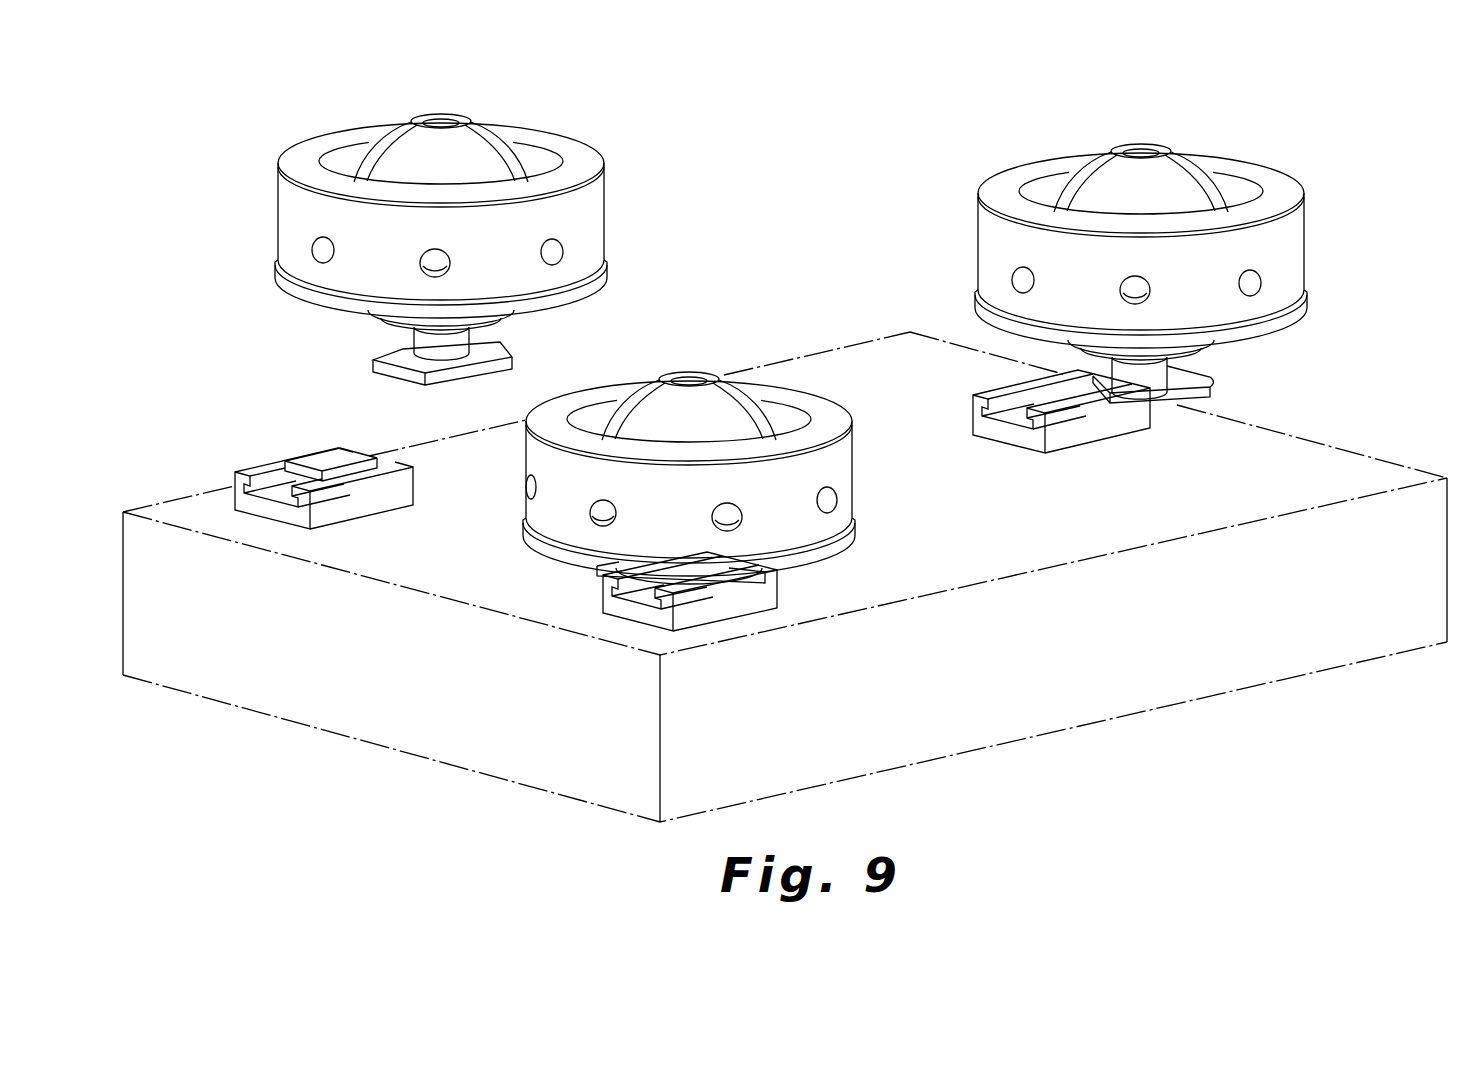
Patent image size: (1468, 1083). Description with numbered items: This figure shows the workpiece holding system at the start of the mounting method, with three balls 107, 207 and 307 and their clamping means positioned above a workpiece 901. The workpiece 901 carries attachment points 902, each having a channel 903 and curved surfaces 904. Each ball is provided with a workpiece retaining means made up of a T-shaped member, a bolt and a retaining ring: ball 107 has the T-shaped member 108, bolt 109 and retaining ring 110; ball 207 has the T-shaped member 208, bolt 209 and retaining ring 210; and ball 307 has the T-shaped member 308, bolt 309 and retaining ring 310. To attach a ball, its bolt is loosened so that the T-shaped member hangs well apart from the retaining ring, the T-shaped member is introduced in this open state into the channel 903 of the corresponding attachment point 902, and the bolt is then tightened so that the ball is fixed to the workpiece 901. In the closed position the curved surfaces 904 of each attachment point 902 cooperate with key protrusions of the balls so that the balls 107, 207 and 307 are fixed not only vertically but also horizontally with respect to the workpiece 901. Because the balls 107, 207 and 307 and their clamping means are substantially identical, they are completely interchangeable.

The ball 107 is at (746, 373).
The T-shaped member 108 is at (593, 608).
The bolt 109 is at (727, 350).
The retaining ring 110 is at (753, 578).
The ball 207 is at (1196, 147).
The T-shaped member 208 is at (1241, 395).
The bolt 209 is at (1173, 123).
The retaining ring 210 is at (1233, 363).
The ball 307 is at (489, 121).
The T-shaped member 308 is at (332, 332).
The bolt 309 is at (468, 93).
The retaining ring 310 is at (497, 333).
The workpiece 901 is at (1093, 700).
The attachment point 902 is at (683, 536).
The channel 903 is at (278, 500).
The curved surface 904 is at (298, 455).